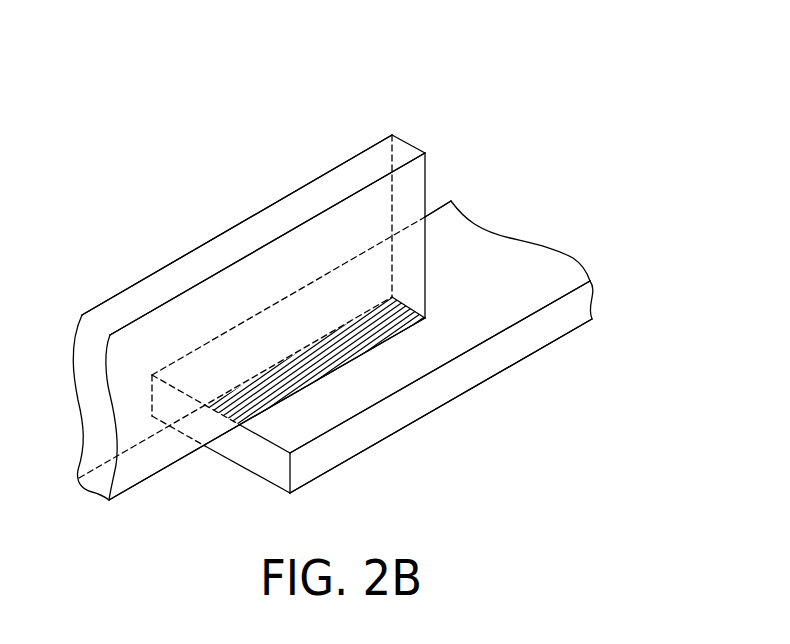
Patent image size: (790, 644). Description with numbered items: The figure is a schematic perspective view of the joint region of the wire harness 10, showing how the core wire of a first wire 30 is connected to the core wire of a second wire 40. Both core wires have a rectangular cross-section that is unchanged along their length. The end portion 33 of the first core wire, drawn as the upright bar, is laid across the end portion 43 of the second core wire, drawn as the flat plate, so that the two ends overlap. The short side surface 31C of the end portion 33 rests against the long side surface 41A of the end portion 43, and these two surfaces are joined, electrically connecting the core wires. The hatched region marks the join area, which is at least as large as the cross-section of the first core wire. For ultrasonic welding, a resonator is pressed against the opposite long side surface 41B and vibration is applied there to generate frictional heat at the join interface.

The wire harness 10 is at (535, 122).
The block (first member) 30 is at (408, 142).
The end portion 33 is at (322, 192).
The short side surface 31C is at (160, 473).
The plate (second member) 40 is at (575, 262).
The long side surface 41A is at (493, 246).
The long side surface 41B is at (535, 355).
The end portion 43 is at (363, 392).